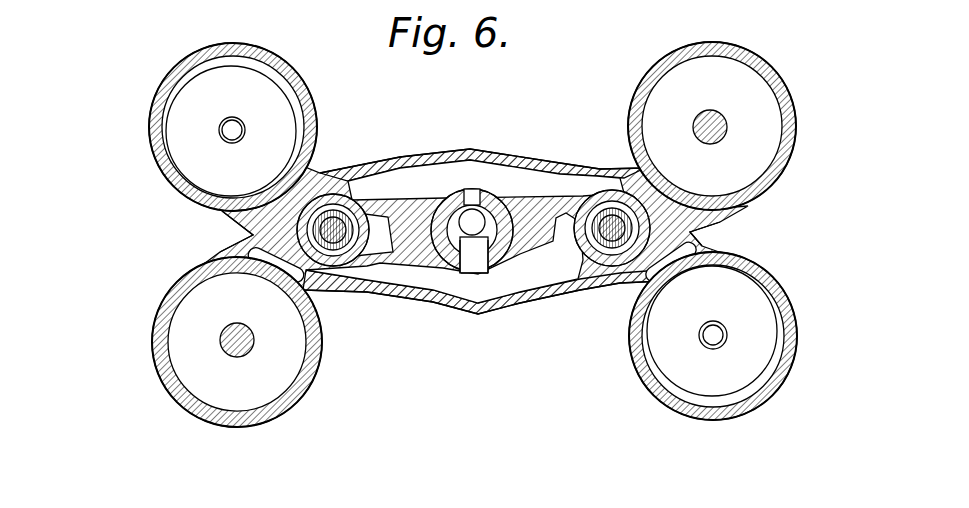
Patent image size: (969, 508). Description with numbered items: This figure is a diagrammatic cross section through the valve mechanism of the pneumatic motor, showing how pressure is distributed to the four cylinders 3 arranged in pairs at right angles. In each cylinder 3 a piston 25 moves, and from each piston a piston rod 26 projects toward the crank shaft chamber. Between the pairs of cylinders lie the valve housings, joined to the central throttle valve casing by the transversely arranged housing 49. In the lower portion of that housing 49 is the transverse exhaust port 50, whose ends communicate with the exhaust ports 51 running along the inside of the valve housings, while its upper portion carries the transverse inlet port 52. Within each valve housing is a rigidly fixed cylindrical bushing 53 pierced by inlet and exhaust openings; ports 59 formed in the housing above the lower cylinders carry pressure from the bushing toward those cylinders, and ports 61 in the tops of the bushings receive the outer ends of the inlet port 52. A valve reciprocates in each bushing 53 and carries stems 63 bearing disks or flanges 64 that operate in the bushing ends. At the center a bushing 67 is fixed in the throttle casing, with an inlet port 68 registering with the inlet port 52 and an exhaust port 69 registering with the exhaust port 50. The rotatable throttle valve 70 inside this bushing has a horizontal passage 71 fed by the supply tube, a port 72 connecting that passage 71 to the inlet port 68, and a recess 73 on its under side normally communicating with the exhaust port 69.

The cylinders 3 is at (271, 52).
The piston 25 is at (190, 102).
The piston rod 26 is at (715, 110).
The transversely arranged housing 49 is at (417, 300).
The exhaust port 50 is at (552, 352).
The exhaust ports 51 is at (362, 280).
The inlet port 52 is at (409, 163).
The cylindrical bushing 53 is at (296, 235).
The ports 59 is at (264, 262).
The ports 61 is at (335, 200).
The stems 63 is at (350, 207).
The disks or flanges 64 is at (484, 247).
The bushing 67 is at (501, 200).
The inlet port 68 is at (473, 207).
The exhaust port 69 is at (475, 274).
The throttle valve 70 is at (505, 272).
The horizontal passage 71 is at (457, 274).
The port 72 is at (459, 148).
The recess 73 is at (466, 274).